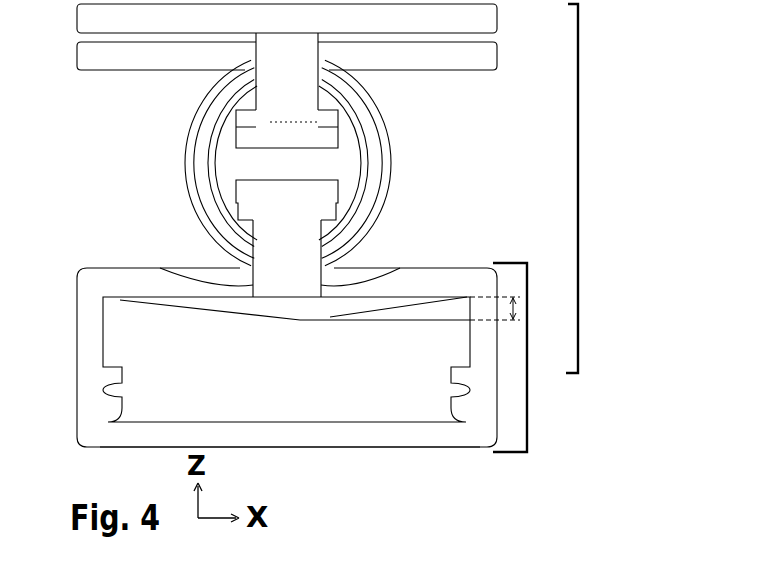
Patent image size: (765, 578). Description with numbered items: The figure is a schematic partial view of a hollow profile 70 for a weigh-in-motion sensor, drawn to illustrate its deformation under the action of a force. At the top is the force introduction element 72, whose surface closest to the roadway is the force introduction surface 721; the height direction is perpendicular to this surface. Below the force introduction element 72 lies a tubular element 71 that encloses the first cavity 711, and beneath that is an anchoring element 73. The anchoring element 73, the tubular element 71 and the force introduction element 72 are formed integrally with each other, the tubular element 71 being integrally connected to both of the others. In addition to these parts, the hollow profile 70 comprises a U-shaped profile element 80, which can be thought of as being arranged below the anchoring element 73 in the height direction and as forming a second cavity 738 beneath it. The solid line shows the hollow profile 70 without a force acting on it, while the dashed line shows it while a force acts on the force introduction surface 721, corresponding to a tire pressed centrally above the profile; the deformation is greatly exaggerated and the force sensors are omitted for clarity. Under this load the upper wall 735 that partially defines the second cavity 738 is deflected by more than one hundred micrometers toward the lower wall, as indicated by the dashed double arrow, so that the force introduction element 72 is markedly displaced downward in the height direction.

The hollow profile 70 is at (578, 190).
The force introduction element 72 is at (450, 22).
The force introduction surface 721 is at (200, 4).
The tubular element 71 is at (373, 175).
The first cavity 711 is at (353, 147).
The anchoring element 73 is at (527, 357).
The upper wall 735 is at (183, 285).
The second cavity 738 is at (300, 393).
The U-shaped profile element 80 is at (339, 440).